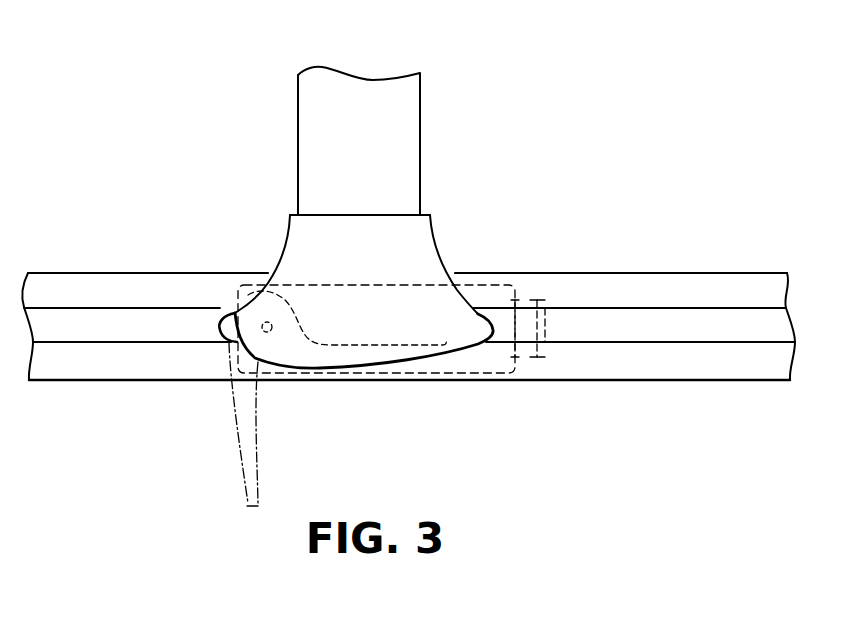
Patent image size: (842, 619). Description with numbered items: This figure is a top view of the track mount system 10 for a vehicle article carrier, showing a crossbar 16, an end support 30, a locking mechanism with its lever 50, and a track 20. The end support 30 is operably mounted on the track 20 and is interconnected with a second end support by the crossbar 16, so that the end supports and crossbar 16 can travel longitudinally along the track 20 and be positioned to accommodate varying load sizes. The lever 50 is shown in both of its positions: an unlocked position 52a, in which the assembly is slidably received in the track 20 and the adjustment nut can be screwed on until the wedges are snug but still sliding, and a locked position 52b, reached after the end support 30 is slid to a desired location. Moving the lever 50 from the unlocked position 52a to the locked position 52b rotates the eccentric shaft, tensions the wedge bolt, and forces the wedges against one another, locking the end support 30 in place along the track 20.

The track mount system 10 is at (471, 104).
The crossbar 16 is at (296, 150).
The track 20 is at (654, 386).
The end support 30 is at (440, 246).
The lever 50 is at (461, 379).
The unlocked position 52a is at (237, 483).
The locked position 52b is at (345, 375).